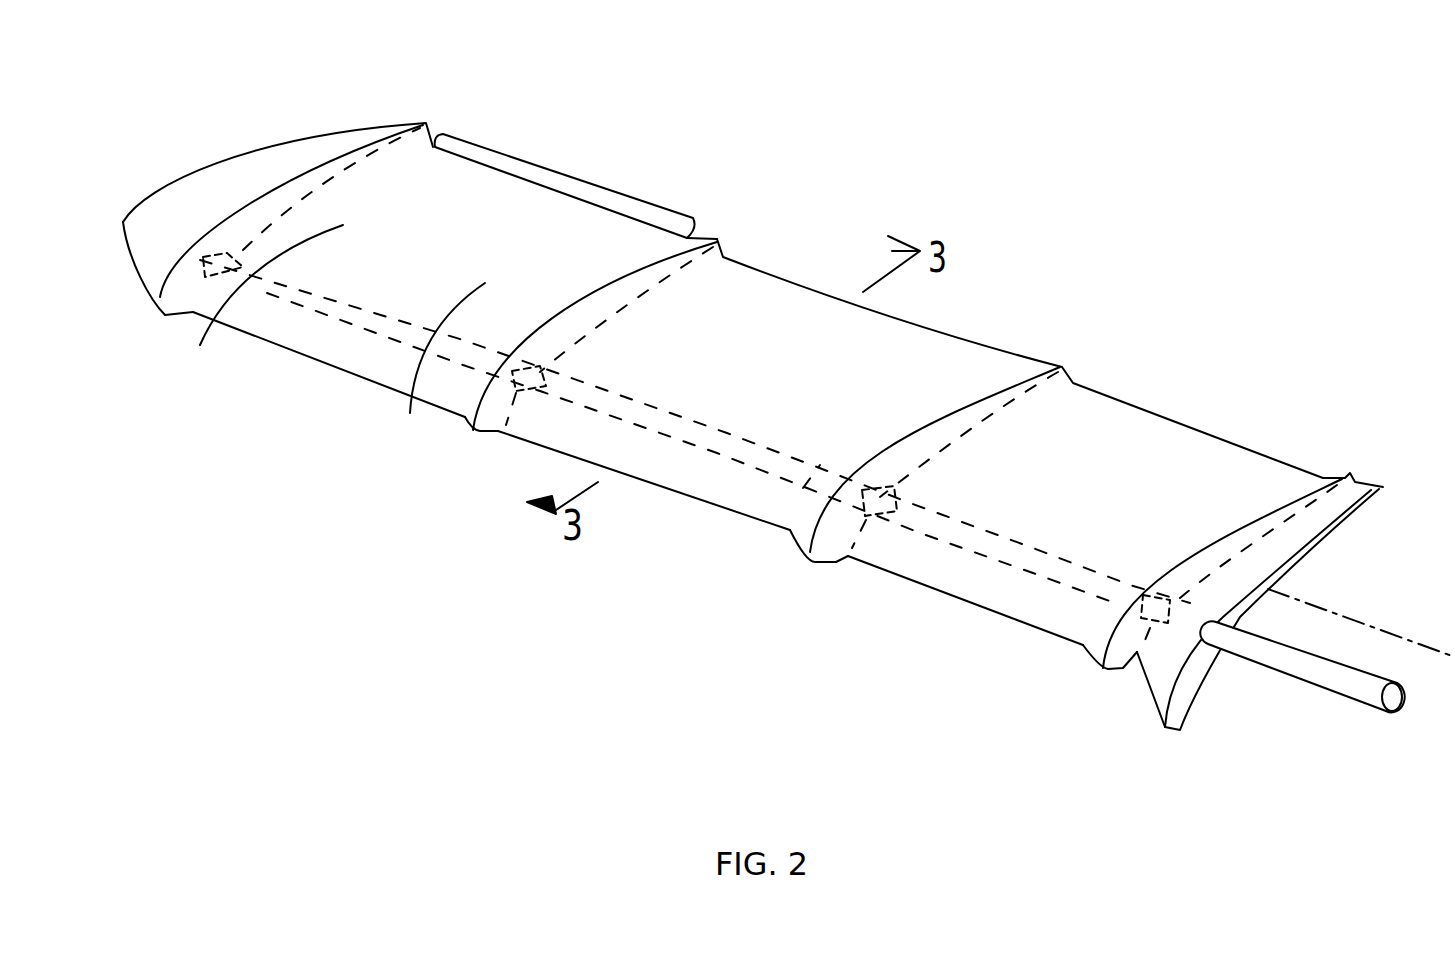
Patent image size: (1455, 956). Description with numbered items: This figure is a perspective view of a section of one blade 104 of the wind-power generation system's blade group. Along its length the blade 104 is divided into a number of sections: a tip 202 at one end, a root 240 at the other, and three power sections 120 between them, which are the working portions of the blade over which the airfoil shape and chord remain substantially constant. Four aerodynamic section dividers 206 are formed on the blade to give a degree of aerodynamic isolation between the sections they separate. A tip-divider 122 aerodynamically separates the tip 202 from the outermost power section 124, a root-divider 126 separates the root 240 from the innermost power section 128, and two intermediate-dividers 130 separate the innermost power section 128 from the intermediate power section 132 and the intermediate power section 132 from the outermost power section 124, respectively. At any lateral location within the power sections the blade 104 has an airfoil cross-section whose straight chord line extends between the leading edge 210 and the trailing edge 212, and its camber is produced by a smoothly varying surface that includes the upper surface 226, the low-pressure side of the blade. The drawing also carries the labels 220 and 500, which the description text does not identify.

The blade 104 is at (1228, 467).
The power sections 120 is at (570, 167).
The tip-divider 122 is at (340, 148).
The outermost power section 124 is at (552, 354).
The root-divider 126 is at (1120, 640).
The innermost power section 128 is at (1095, 502).
The intermediate-dividers 130 is at (487, 390).
The intermediate power section 132 is at (792, 375).
The tip 202 is at (175, 173).
The aerodynamic section dividers 206 is at (285, 182).
The leading edge 210 is at (297, 337).
The trailing edge 212 is at (797, 277).
The axis 220 is at (1327, 603).
The upper surface 226 is at (253, 309).
The root 240 is at (1181, 693).
The rod 500 is at (1327, 669).